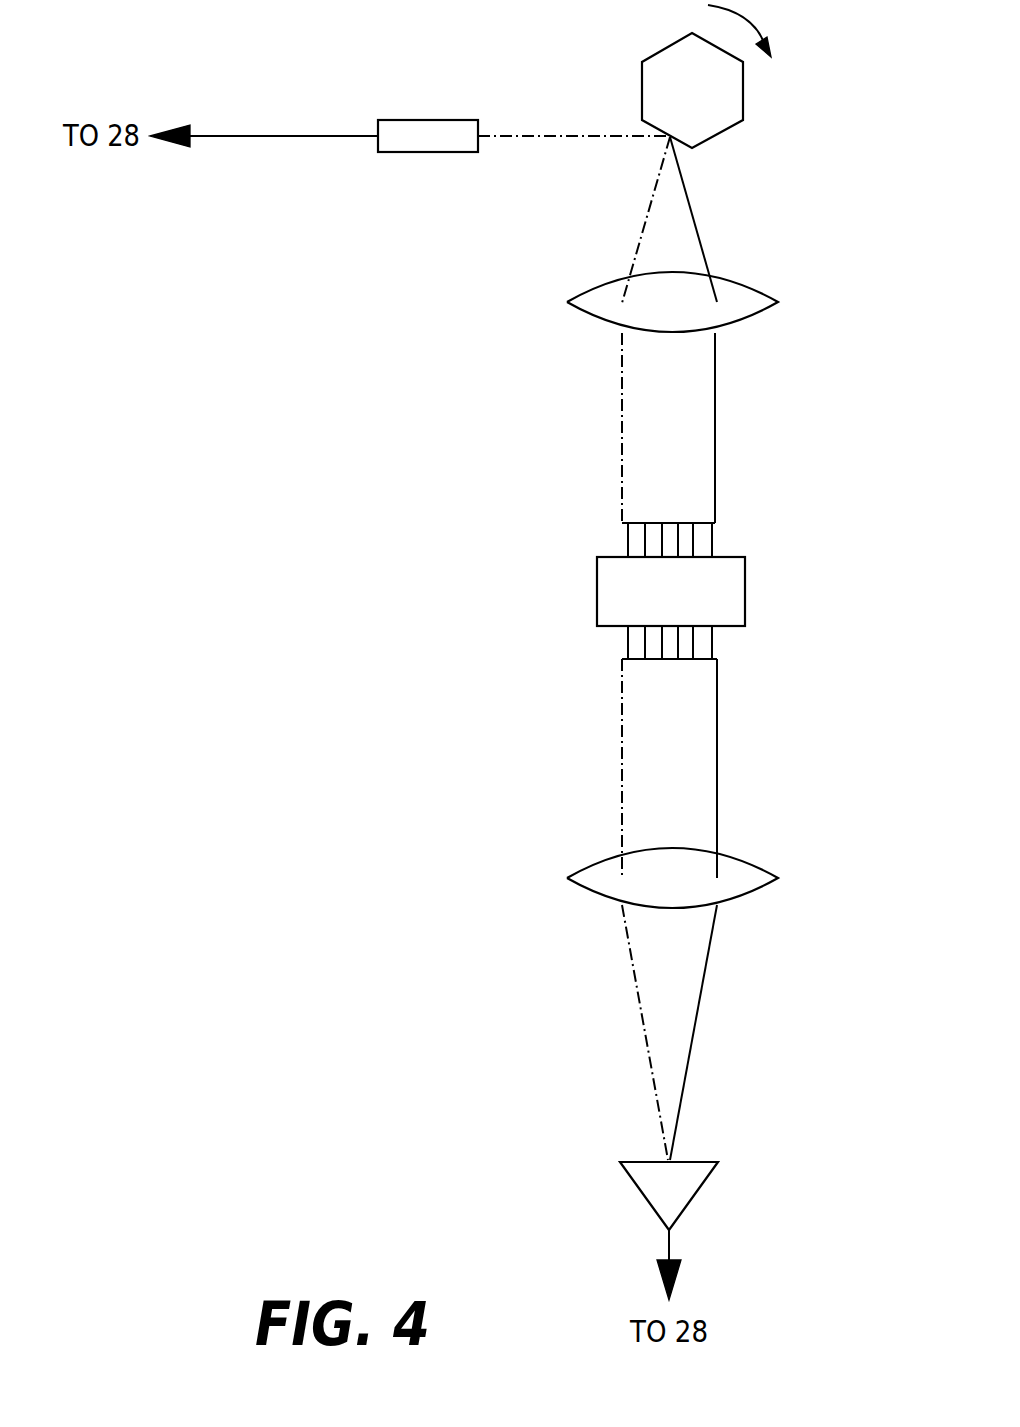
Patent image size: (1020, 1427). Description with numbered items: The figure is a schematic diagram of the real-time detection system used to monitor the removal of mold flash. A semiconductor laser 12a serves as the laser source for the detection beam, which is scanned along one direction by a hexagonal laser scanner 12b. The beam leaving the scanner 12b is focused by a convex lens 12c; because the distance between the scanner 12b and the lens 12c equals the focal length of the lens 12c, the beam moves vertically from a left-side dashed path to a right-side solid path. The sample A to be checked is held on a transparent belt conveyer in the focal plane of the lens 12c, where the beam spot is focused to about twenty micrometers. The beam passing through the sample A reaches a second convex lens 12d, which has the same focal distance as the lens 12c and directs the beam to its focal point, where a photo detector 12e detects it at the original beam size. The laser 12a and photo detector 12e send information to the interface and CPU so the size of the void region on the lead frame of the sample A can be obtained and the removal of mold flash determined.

The semiconductor laser 12a is at (430, 120).
The hexagonal laser scanner 12b is at (743, 93).
The convex lens 12c is at (592, 292).
The sample A is at (597, 597).
The second convex lens 12d is at (590, 871).
The photo detector 12e is at (652, 1200).